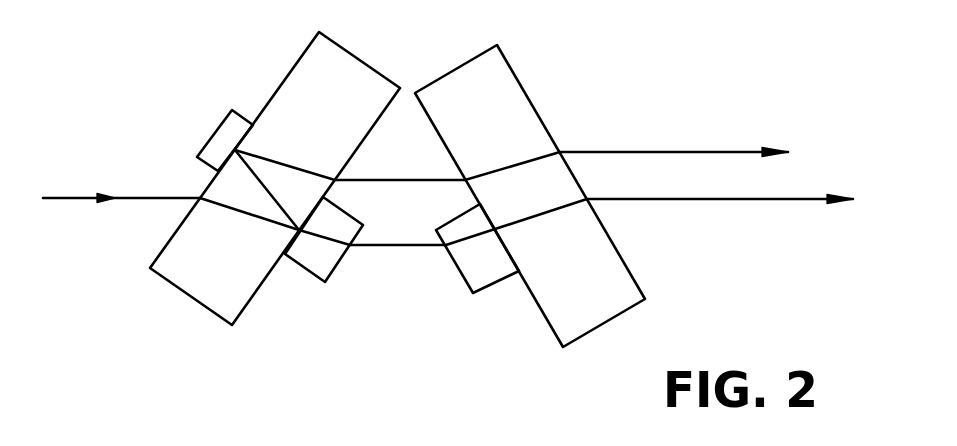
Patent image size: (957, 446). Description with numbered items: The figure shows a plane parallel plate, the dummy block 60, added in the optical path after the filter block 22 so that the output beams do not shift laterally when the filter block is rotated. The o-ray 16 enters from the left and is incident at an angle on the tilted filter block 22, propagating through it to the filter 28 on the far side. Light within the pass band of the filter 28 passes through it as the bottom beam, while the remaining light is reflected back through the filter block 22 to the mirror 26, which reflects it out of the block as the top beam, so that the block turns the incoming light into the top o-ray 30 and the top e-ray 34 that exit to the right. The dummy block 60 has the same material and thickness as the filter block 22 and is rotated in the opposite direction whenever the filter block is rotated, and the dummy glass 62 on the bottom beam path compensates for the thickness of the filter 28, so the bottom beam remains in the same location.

The o-ray 16 is at (72, 198).
The filter block 22 is at (287, 73).
The mirror 26 is at (218, 127).
The filter 28 is at (338, 265).
The top o-ray 30 is at (688, 200).
The top e-ray 34 is at (615, 152).
The dummy block 60 is at (522, 88).
The dummy glass 62 is at (455, 275).